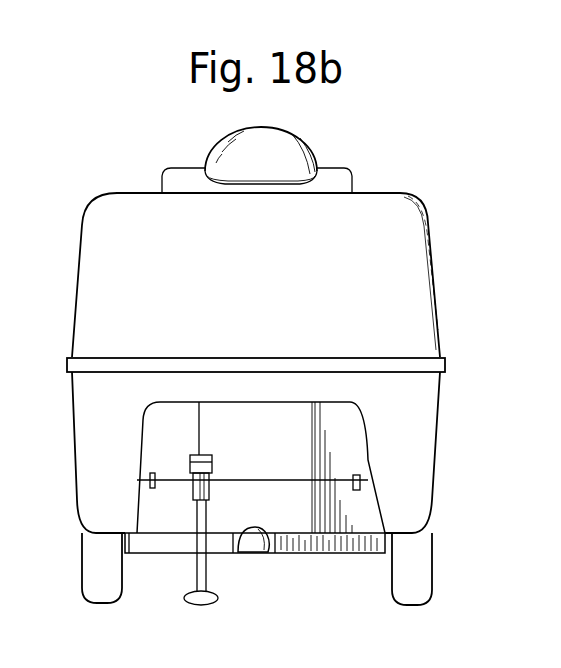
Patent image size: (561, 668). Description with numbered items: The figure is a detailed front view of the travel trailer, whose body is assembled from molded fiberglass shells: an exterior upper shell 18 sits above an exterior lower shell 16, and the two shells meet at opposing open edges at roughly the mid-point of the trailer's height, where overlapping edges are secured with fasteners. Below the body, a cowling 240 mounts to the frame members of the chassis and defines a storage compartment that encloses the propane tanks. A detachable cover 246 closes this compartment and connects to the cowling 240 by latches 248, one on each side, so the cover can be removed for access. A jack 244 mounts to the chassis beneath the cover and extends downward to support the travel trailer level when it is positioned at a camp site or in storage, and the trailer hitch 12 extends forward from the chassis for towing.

The exterior upper shell 18 is at (214, 283).
The exterior lower shell 16 is at (109, 429).
The latches 248 is at (152, 473).
The detachable cover 246 is at (256, 445).
The jack 244 is at (209, 495).
The cowling 240 is at (173, 528).
The trailer hitch 12 is at (258, 553).